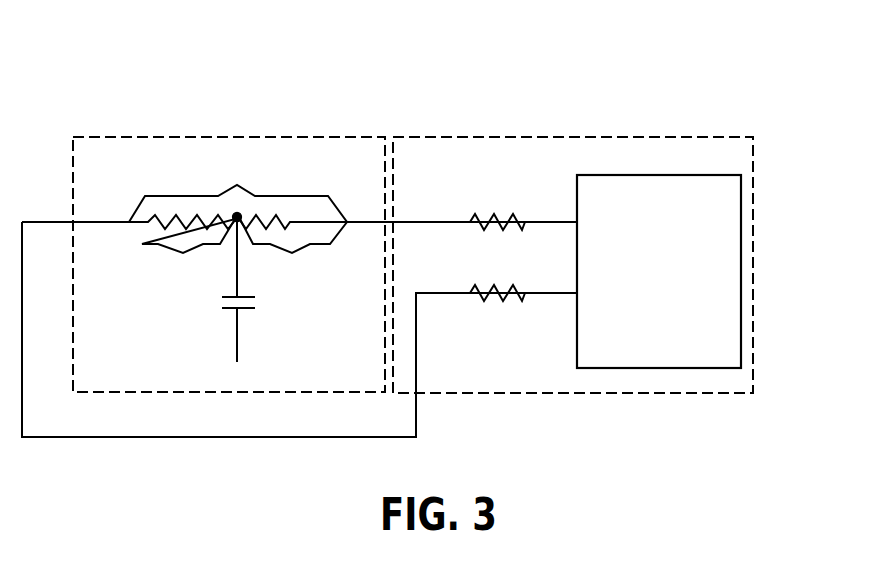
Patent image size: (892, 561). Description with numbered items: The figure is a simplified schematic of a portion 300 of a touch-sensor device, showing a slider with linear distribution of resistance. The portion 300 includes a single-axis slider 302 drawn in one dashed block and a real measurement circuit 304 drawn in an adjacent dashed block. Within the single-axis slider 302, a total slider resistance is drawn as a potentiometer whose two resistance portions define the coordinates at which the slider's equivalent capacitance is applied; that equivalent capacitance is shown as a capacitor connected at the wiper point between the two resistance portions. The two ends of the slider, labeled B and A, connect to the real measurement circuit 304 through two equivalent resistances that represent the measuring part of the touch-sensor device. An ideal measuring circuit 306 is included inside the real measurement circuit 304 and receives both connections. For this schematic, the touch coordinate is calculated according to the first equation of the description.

The portion of a touch-sensor device 300 is at (420, 86).
The single-axis slider 302 is at (107, 136).
The real measurement circuit 304 is at (737, 136).
The ideal measuring circuit 306 is at (752, 312).